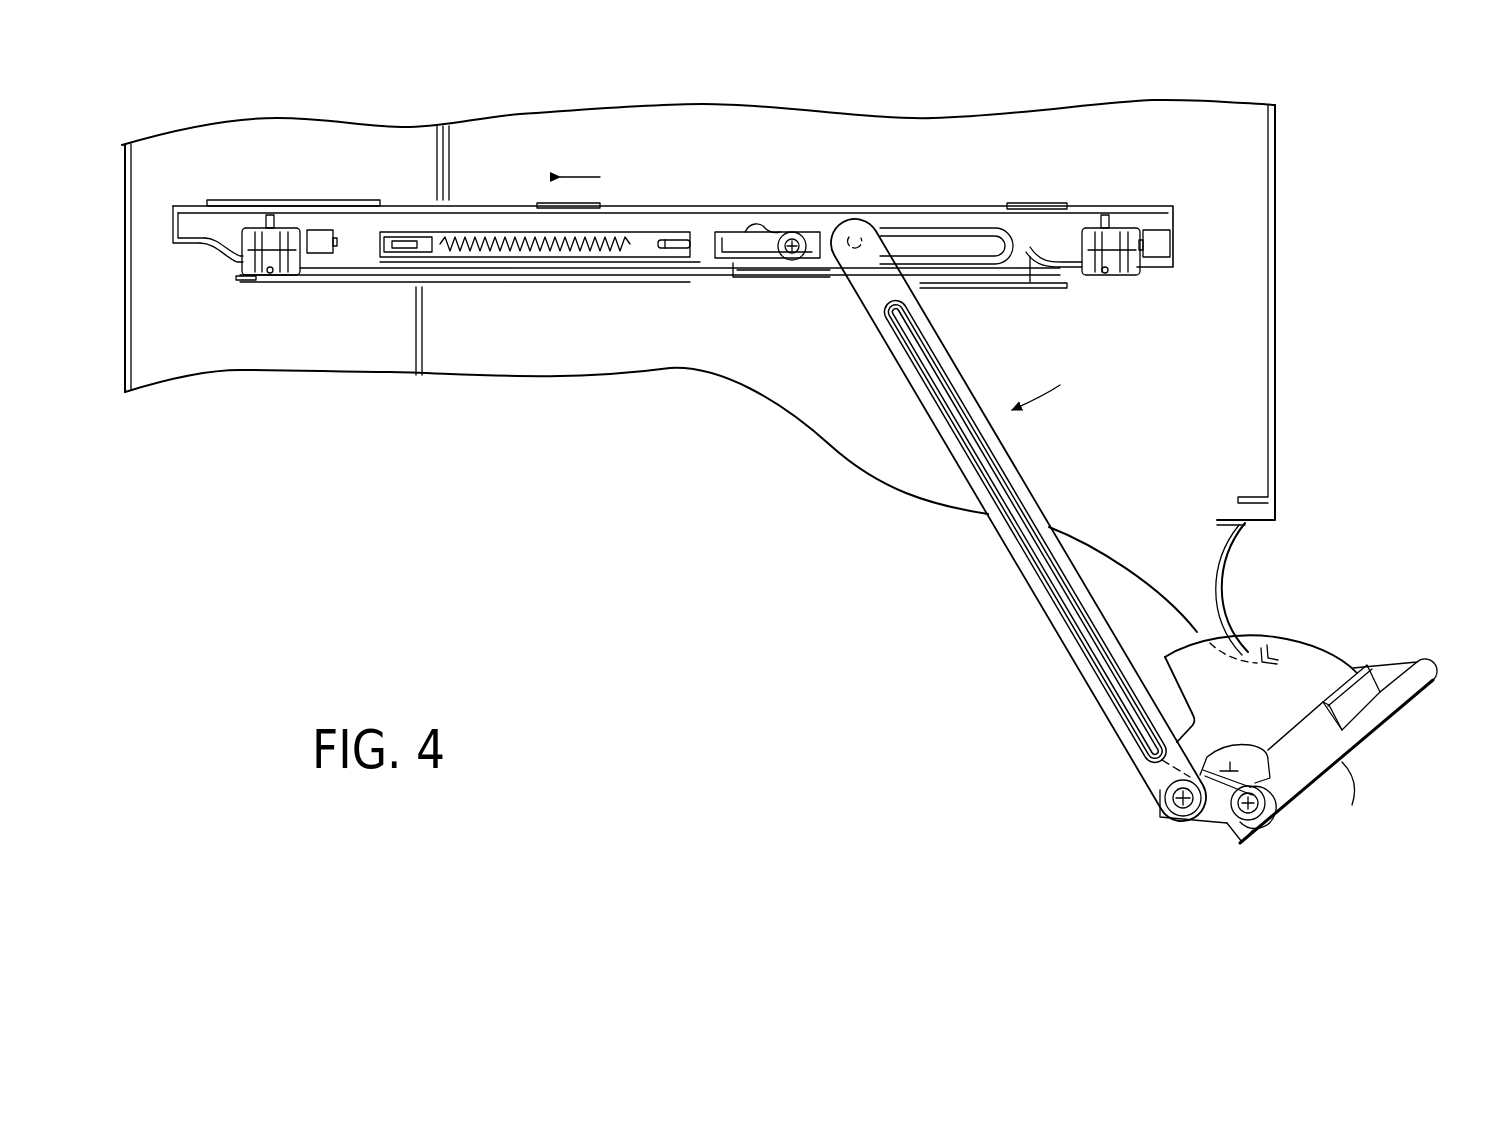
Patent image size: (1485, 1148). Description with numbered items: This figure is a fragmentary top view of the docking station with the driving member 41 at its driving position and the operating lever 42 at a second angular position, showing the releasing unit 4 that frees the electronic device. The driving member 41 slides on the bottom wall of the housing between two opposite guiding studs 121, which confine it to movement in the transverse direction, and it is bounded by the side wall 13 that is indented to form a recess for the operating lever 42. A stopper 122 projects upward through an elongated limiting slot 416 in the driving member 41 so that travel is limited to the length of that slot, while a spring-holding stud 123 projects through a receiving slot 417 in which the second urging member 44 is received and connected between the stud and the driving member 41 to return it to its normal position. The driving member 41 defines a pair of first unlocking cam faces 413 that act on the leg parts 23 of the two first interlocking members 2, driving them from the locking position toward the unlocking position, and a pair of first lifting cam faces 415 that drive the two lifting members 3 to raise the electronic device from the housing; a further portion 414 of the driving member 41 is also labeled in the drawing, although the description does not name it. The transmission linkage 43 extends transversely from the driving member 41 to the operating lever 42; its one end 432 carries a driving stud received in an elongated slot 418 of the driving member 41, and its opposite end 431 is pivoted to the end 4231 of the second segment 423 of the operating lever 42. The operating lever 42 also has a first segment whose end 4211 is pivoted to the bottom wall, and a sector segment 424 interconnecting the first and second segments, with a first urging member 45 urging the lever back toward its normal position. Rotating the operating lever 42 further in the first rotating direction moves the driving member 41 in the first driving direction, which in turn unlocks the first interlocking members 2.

The first interlocking member 2 is at (1142, 236).
The lifting member 3 is at (312, 236).
The releasing unit 4 is at (967, 617).
The side wall 13 is at (1273, 280).
The leg part 23 is at (268, 282).
The driving member 41 is at (1098, 205).
The operating lever 42 is at (1258, 741).
The transmission linkage 43 is at (989, 506).
The second urging member 44 is at (560, 252).
The first urging member 45 is at (1206, 815).
The guiding stud 121 is at (346, 202).
The stopper 122 is at (792, 260).
The spring-holding stud 123 is at (667, 240).
The first unlocking cam face 413 is at (218, 250).
The stop block 414 is at (338, 242).
The first lifting cam face 415 is at (302, 256).
The limiting slot 416 is at (742, 244).
The receiving slot 417 is at (521, 252).
The elongated slot 418 is at (932, 246).
The second segment 423 is at (1197, 823).
The sector segment 424 is at (1310, 670).
The opposite end 431 is at (1157, 790).
The one end 432 is at (858, 236).
The end of first segment 4211 is at (1362, 738).
The end of second segment 4231 is at (1163, 827).